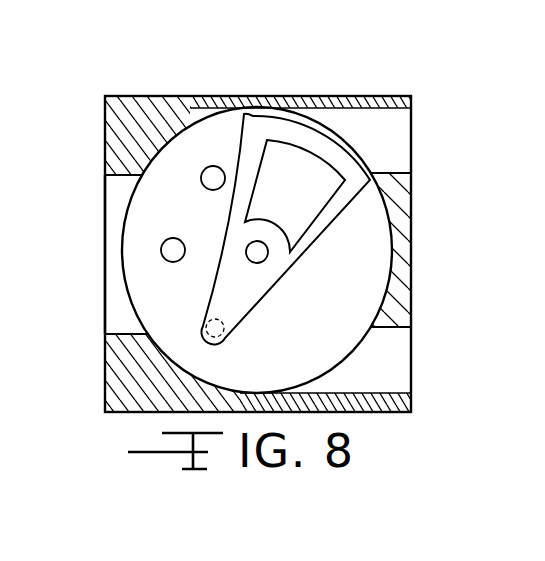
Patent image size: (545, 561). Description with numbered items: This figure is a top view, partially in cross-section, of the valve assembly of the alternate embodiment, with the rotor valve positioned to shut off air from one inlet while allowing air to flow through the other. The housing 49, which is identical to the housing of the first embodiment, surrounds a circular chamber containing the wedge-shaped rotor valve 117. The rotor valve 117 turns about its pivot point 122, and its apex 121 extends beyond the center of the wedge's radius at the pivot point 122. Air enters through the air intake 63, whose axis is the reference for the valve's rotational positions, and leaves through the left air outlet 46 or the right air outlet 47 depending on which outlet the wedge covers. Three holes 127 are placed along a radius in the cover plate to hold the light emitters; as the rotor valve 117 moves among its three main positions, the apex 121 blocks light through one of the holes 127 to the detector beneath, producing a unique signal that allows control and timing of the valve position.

The left air outlet 46 is at (411, 140).
The right air outlet 47 is at (400, 358).
The housing 49 is at (411, 298).
The air intake 63 is at (108, 226).
The rotor valve 117 is at (250, 143).
The apex 121 is at (223, 343).
The pivot point 122 is at (258, 263).
The holes 127 is at (205, 169).